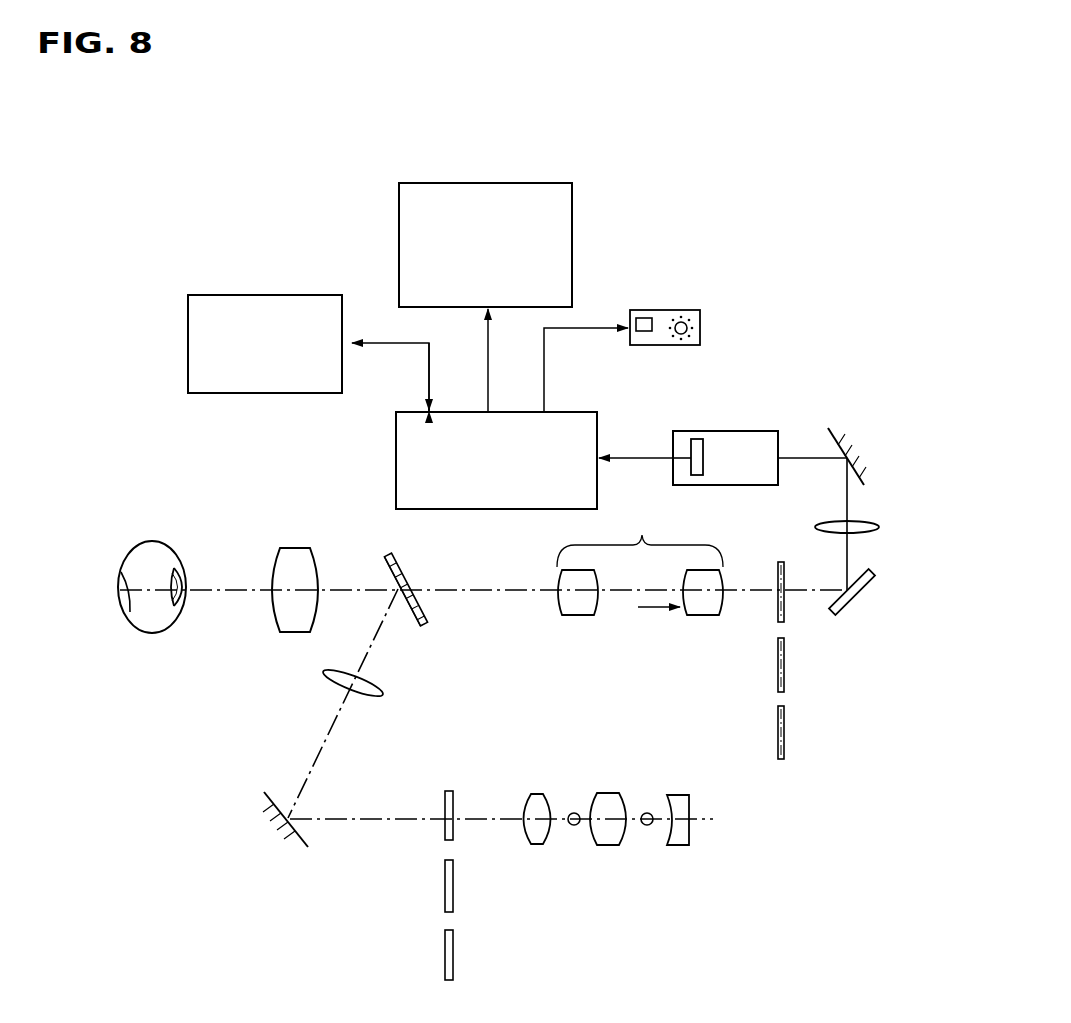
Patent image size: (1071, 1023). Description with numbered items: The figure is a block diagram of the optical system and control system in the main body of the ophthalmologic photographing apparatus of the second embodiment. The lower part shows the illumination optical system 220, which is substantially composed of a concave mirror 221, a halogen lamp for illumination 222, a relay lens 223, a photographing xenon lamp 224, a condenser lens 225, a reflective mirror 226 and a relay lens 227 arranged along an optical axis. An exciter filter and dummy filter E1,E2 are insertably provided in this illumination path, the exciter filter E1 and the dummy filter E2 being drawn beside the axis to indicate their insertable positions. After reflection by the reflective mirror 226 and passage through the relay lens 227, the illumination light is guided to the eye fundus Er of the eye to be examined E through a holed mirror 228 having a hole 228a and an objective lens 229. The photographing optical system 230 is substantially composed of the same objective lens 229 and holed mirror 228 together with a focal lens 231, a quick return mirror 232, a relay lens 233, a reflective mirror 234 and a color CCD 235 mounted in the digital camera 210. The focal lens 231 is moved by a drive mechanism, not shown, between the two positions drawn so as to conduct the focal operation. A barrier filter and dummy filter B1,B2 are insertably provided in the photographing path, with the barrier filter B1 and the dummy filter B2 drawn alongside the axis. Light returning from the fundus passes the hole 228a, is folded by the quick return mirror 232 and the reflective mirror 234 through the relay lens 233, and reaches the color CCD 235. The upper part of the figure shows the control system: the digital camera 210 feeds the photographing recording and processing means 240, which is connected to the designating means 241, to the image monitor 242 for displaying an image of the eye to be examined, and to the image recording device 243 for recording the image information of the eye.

The image recording device 243 is at (284, 295).
The image monitor 242 is at (572, 222).
The designating means 241 is at (700, 318).
The photographing recording and processing means 240 is at (567, 412).
The color CCD 235 is at (692, 440).
The digital camera 210 is at (713, 420).
The reflective mirror 234 is at (848, 432).
The relay lens 233 is at (815, 527).
The quick return mirror 232 is at (862, 612).
The focal lens 231 is at (578, 615).
The photographing optical system 230 is at (496, 600).
The barrier filter and dummy filter B1,B2 is at (778, 615).
The barrier filter B1 is at (784, 670).
The dummy filter B2 is at (784, 735).
The eye to be examined E is at (154, 572).
The eye fundus Er is at (124, 597).
The objective lens 229 is at (295, 548).
The holed mirror 228 is at (448, 607).
The hole 228a is at (405, 577).
The relay lens 227 is at (383, 693).
The reflective mirror 226 is at (268, 815).
The illumination optical system 220 is at (354, 843).
The exciter filter and dummy filter E1,E2 is at (453, 793).
The exciter filter E1 is at (445, 880).
The dummy filter E2 is at (445, 948).
The condenser lens 225 is at (537, 844).
The photographing xenon lamp 224 is at (574, 825).
The relay lens 223 is at (606, 845).
The halogen lamp for illumination 222 is at (648, 825).
The concave mirror 221 is at (689, 830).